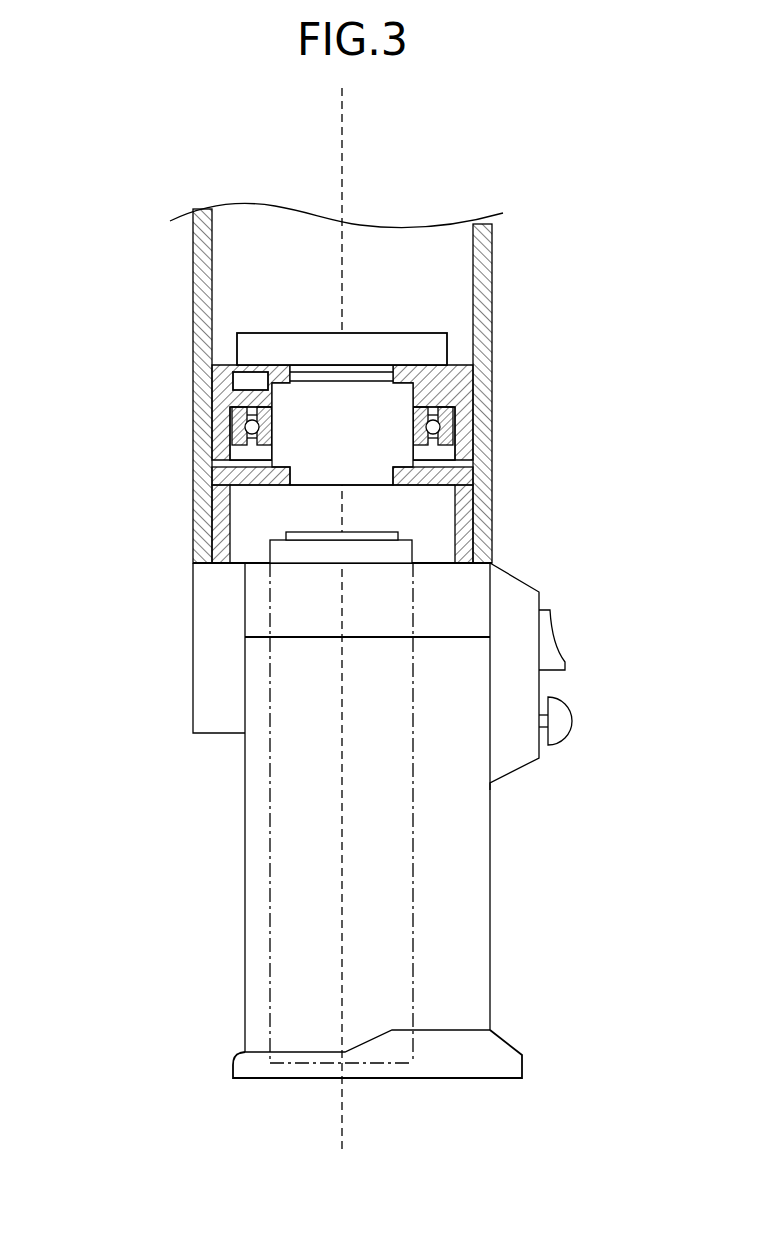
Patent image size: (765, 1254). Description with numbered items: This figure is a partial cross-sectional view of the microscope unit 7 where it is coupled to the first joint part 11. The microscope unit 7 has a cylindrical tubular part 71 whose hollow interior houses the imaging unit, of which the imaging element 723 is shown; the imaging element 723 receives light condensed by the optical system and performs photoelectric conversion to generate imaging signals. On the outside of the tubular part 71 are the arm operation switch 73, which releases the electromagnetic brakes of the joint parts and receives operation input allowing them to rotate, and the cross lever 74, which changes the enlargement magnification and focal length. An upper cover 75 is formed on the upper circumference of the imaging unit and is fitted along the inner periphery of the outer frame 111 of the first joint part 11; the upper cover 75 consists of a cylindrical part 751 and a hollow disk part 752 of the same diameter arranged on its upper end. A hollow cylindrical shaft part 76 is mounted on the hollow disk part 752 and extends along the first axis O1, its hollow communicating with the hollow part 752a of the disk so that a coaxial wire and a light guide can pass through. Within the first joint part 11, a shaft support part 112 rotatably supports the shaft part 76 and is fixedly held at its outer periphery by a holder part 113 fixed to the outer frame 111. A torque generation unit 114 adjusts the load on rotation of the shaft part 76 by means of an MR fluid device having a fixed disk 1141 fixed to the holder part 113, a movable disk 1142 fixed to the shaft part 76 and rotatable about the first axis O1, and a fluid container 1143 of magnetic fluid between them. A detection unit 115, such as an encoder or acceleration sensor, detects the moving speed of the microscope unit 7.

The microscope unit 7 is at (347, 805).
The first joint part 11 is at (197, 355).
The tubular part 71 is at (245, 876).
The arm operation switch 73 is at (547, 643).
The cross lever 74 is at (560, 718).
The upper cover 75 is at (353, 515).
The shaft part 76 is at (302, 390).
The outer frame 111 is at (197, 286).
The shaft support part 112 is at (240, 438).
The holder part 113 is at (225, 420).
The torque generation unit 114 is at (407, 330).
The detection unit 115 is at (243, 384).
The imaging element 723 is at (280, 533).
The cylindrical part 751 is at (463, 520).
The hollow disk part 752 is at (220, 478).
The hollow part 752a is at (384, 478).
The fixed disk 1141 is at (415, 352).
The movable disk 1142 is at (393, 381).
The fluid container 1143 is at (393, 372).
The first axis O1 is at (342, 114).